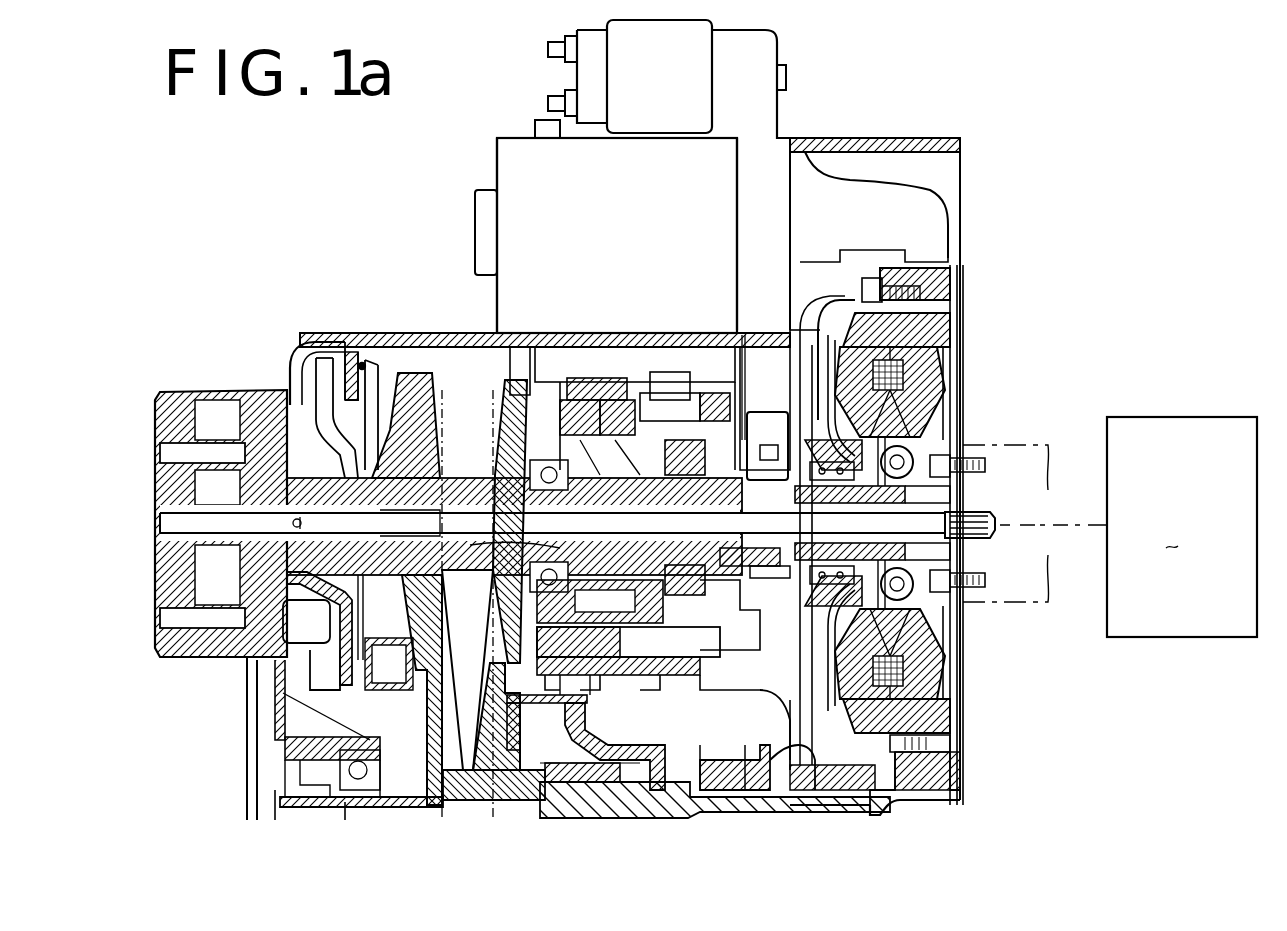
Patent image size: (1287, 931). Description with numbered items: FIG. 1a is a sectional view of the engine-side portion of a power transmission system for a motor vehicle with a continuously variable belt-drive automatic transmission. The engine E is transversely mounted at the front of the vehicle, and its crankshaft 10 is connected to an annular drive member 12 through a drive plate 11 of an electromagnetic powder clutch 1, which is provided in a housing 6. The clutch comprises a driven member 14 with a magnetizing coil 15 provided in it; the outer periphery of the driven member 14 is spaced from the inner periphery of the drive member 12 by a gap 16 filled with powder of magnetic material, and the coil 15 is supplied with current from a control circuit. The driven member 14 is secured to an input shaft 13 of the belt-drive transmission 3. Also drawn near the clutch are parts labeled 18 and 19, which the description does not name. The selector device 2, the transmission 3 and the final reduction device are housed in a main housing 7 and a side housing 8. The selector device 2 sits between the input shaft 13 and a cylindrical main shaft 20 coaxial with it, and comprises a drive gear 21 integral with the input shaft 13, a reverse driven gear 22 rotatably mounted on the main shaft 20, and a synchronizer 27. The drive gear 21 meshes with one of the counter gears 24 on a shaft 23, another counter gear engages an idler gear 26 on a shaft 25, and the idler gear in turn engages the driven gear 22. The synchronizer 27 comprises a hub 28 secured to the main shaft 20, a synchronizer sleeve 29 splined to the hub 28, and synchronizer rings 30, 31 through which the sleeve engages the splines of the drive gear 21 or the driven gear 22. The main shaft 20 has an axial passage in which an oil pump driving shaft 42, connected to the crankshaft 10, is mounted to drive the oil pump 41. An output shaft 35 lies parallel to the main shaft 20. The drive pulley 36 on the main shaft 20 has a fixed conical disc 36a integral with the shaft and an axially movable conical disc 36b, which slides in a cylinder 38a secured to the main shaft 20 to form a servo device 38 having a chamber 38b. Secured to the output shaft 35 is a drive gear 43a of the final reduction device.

The electromagnetic powder clutch 1 is at (990, 284).
The selector device 2 is at (600, 352).
The continuously variable belt-drive transmission 3 is at (456, 346).
The housing 6 is at (940, 800).
The main housing 7 is at (515, 346).
The side housing 8 is at (290, 370).
The crankshaft 10 is at (1025, 443).
The drive plate 11 is at (963, 640).
The annular drive member 12 is at (855, 320).
The input shaft 13 is at (768, 568).
The driven member 14 is at (918, 362).
The magnetizing coil 15 is at (935, 405).
The gap 16 is at (945, 333).
The spacer sleeve 18 is at (785, 578).
The sensor 19 is at (785, 420).
The main shaft 20 is at (507, 526).
The drive gear 21 is at (686, 448).
The reverse driven gear 22 is at (514, 526).
The shaft 23 is at (672, 670).
The counter gears 24 is at (620, 670).
The shaft 25 is at (650, 402).
The idler gear 26 is at (594, 365).
The synchronizer 27 is at (672, 625).
The hub 28 is at (515, 555).
The synchronizer sleeve 29 is at (610, 434).
The synchronizer ring 30 is at (685, 408).
The synchronizer ring 31 is at (580, 414).
The output shaft 35 is at (616, 823).
The drive pulley 36 is at (492, 425).
The fixed conical disc 36a is at (512, 398).
The movable conical disc 36b is at (436, 392).
The servo device 38 is at (360, 338).
The cylinder 38a is at (355, 355).
The chamber 38b is at (398, 355).
The oil pump 41 is at (207, 398).
The oil pump driving shaft 42 is at (160, 521).
The drive gear 43a is at (768, 758).
The engine E is at (1182, 527).